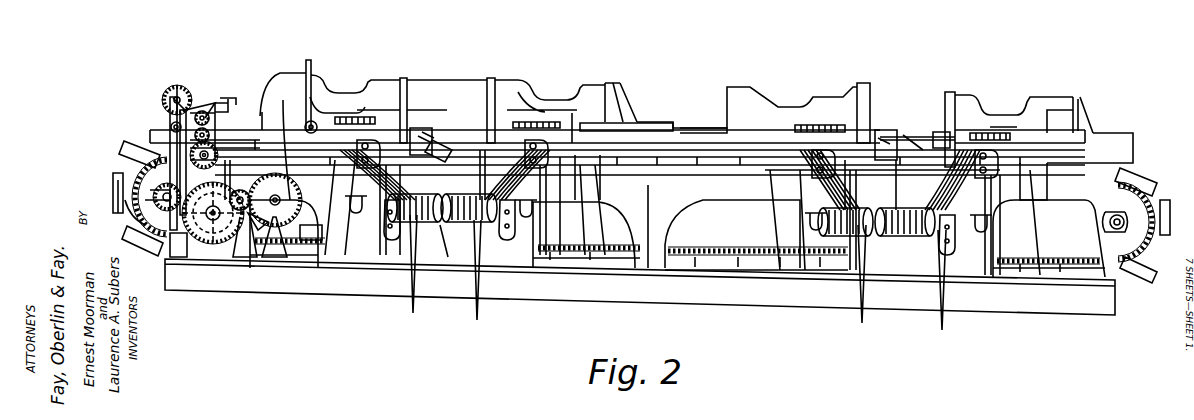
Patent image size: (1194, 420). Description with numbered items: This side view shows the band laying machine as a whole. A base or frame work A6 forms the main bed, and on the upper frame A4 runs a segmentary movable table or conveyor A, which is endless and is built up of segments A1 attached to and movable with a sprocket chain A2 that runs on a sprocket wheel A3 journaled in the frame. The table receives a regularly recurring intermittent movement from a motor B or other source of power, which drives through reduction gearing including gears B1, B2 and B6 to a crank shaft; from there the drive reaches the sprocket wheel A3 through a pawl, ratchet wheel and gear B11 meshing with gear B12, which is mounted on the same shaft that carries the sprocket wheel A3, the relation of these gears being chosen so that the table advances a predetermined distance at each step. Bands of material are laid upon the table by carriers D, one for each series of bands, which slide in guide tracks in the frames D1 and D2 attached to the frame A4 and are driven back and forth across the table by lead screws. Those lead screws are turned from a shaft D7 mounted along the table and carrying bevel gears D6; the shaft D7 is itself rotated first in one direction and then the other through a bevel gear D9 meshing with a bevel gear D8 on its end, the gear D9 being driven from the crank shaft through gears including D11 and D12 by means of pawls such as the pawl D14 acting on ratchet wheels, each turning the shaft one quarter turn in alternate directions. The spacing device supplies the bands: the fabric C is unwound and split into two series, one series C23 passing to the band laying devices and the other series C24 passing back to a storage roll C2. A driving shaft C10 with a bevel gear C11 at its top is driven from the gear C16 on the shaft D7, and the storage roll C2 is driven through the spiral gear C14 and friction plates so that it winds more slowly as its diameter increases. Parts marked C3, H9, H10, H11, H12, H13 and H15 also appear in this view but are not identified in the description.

The movable table or conveyor A is at (1095, 170).
The segments A1 is at (1142, 232).
The sprocket chain A2 is at (760, 255).
The sprocket wheel A3 is at (132, 212).
The frame A4 is at (632, 205).
The base or frame work A6 is at (1075, 300).
The motor B is at (166, 250).
The reduction gearing B1 is at (212, 228).
The reduction gearing B2 is at (241, 212).
The reduction gearing B6 is at (252, 160).
The gear B11 is at (238, 205).
The gear B12 is at (160, 197).
The fabric C is at (1010, 130).
The storage roll C2 is at (928, 238).
The hanging arm C3 is at (678, 285).
The driving shaft C10 is at (445, 150).
The bevel gear C11 is at (888, 150).
The spiral gear C14 is at (915, 142).
The gear C16 is at (880, 142).
The series of bands C23 is at (1040, 237).
The series of spaced bands C24 is at (985, 280).
The carriers D is at (975, 105).
The frame D1 is at (942, 97).
The frame D2 is at (1085, 110).
The bevel gears D6 is at (1020, 130).
The shaft D7 is at (656, 137).
The bevel gear D8 is at (316, 118).
The bevel gear D9 is at (310, 110).
The gear D11 is at (283, 100).
The gear D12 is at (312, 200).
The pawl D14 is at (279, 258).
The gear H9 is at (182, 92).
The pinion H10 is at (195, 118).
The gear H11 is at (192, 152).
The pin H12 is at (171, 127).
The pinion H13 is at (195, 133).
The shaft H15 is at (172, 110).